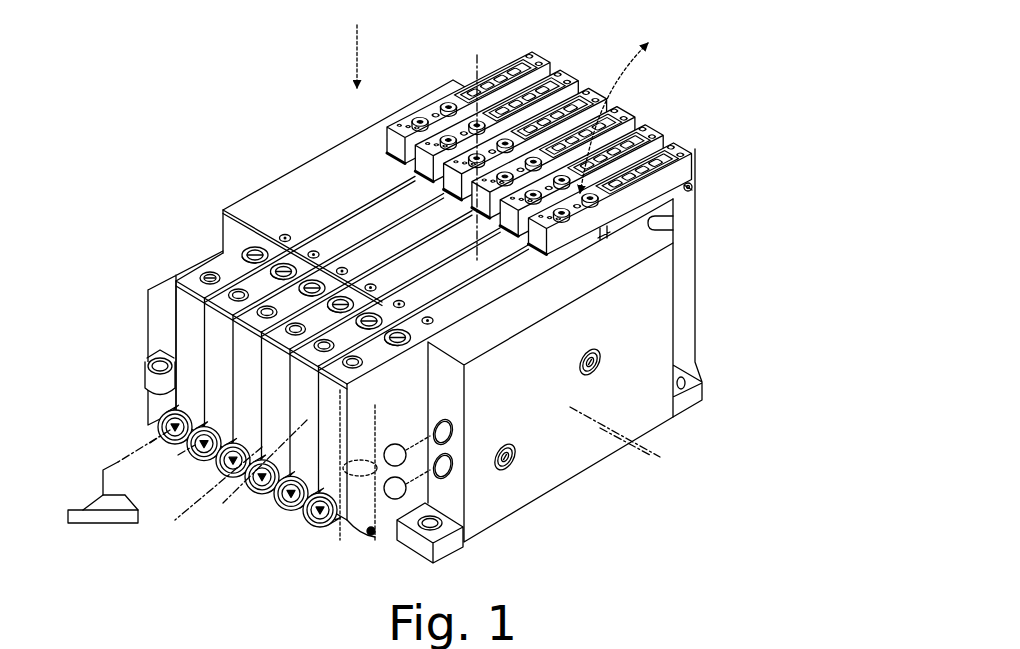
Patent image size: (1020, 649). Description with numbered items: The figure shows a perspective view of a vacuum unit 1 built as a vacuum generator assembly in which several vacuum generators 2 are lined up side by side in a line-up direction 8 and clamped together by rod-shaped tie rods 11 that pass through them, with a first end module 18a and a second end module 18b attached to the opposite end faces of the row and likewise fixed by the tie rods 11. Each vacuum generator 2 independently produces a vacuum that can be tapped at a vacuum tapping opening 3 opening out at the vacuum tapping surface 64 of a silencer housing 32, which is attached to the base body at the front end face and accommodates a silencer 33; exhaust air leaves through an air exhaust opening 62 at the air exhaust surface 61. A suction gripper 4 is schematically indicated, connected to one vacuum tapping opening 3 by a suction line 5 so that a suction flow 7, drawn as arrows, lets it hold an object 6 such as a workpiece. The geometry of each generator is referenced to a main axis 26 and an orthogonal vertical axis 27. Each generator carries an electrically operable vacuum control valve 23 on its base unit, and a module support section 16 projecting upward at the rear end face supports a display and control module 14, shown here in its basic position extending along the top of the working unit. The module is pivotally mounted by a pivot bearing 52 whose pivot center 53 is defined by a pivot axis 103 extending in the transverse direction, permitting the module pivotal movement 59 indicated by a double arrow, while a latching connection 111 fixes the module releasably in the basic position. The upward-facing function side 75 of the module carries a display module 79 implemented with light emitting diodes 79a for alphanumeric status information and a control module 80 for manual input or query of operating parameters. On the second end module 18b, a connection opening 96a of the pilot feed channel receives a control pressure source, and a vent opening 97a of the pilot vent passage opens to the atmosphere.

The vacuum unit 1 is at (277, 125).
The vacuum generator 2 is at (548, 50).
The vacuum tapping opening 3 is at (306, 514).
The suction gripper 4 is at (100, 497).
The suction line 5 is at (114, 466).
The object 6 is at (104, 524).
The suction flow 7 is at (196, 462).
The line-up direction 8 is at (613, 440).
The tie rod 11 is at (602, 363).
The display and control module 14 is at (634, 132).
The module support section 16 is at (688, 256).
The first end module 18a is at (172, 284).
The second end module 18b is at (563, 476).
The vacuum control valve 23 is at (383, 208).
The main axis 26 is at (234, 479).
The vertical axis 27 is at (481, 52).
The silencer housing 32 is at (372, 532).
The silencer 33 is at (350, 518).
The pivot bearing 52 is at (700, 183).
The pivot center 53 is at (690, 193).
The module pivotal movement 59 is at (648, 43).
The air exhaust surface 61 is at (292, 298).
The air exhaust opening 62 is at (210, 272).
The vacuum tapping surface 64 is at (247, 379).
The function side 75 is at (589, 610).
The display module 79 is at (496, 82).
The light emitting diode 79a is at (534, 60).
The control module 80 is at (428, 104).
The connection opening 96a is at (446, 472).
The vent opening 97a is at (446, 430).
The pivot axis 103 is at (700, 193).
The latching connection 111 is at (609, 244).